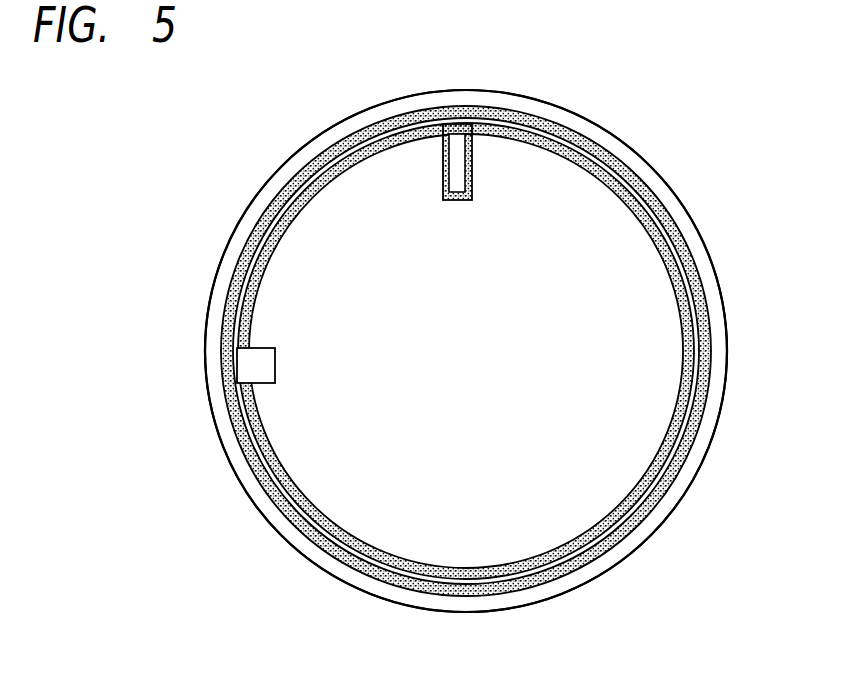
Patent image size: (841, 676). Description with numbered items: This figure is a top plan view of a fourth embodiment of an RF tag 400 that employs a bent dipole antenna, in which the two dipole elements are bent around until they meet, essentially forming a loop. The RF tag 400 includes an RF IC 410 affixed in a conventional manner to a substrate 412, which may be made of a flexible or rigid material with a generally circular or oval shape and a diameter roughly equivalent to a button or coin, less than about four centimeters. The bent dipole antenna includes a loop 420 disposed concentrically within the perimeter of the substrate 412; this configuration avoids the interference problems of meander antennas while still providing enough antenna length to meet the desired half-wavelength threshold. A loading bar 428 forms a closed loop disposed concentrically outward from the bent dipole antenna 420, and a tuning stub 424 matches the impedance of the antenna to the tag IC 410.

The RF tag 400 is at (228, 122).
The substrate 412 is at (610, 135).
The loading bar 428 is at (238, 268).
The loop 420 is at (267, 263).
The tuning stub 424 is at (470, 167).
The RF IC 410 is at (275, 367).